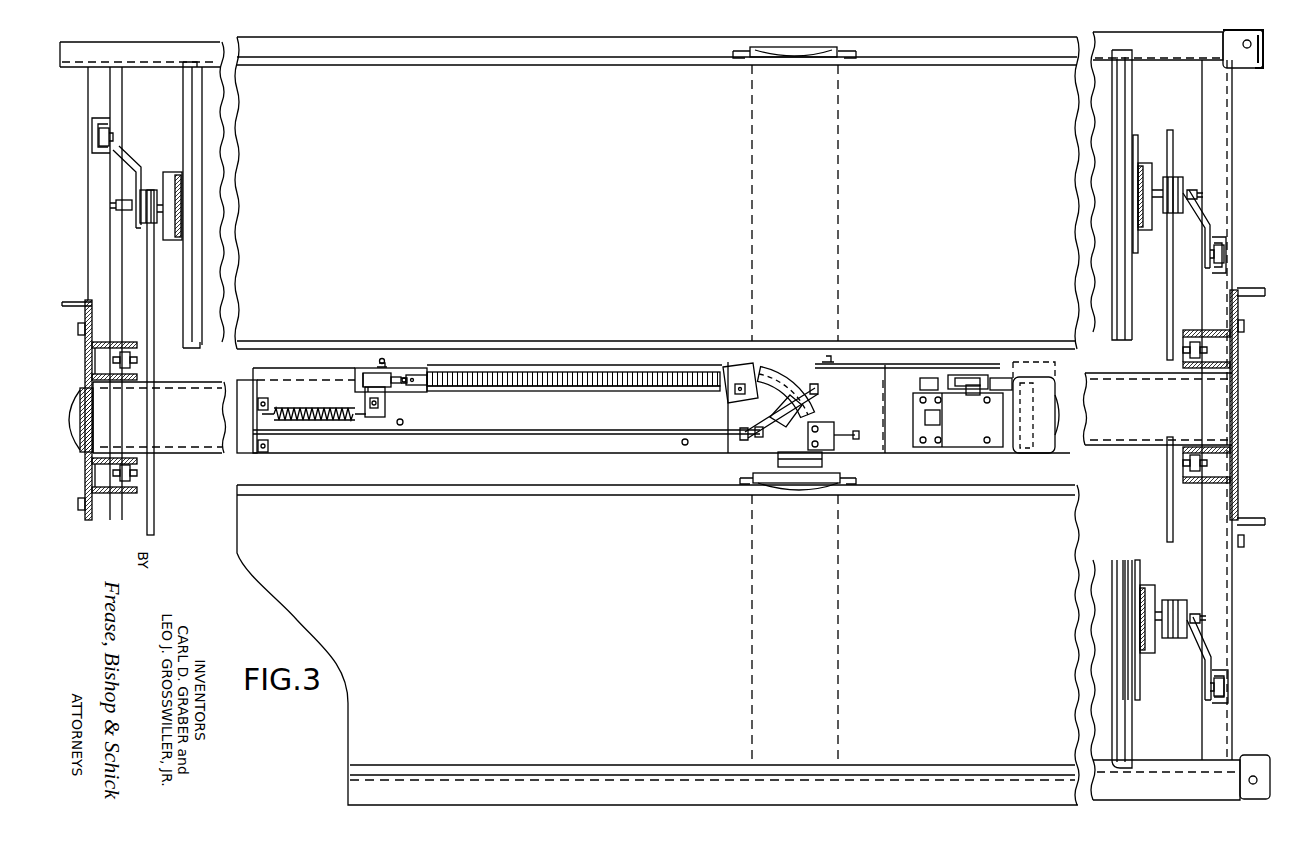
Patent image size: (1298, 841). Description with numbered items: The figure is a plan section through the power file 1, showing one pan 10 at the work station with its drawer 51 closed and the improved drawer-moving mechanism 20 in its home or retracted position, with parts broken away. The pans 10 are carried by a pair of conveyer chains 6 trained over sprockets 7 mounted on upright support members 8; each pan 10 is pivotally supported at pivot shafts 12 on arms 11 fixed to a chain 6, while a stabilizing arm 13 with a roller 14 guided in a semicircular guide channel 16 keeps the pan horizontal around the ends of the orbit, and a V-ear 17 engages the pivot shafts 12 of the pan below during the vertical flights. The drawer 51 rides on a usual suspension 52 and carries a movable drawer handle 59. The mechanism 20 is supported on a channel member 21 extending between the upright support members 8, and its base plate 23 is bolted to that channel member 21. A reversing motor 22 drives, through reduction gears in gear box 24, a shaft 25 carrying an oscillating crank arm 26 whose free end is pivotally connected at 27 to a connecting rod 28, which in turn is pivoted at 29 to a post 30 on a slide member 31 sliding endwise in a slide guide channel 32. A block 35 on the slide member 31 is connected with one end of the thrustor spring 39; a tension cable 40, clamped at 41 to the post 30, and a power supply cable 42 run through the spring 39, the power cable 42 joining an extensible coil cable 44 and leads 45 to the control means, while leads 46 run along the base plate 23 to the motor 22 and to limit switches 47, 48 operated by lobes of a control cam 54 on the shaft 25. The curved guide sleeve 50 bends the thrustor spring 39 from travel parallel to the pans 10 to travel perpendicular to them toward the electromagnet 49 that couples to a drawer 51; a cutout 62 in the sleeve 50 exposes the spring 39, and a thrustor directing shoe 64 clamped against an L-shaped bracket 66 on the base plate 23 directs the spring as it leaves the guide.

The power file 1 is at (935, 27).
The conveyer chains 6 is at (150, 356).
The sprockets 7 is at (365, 470).
The upright support members 8 is at (72, 300).
The pans 10 is at (228, 355).
The arms 11 is at (152, 513).
The pivot shafts 12 is at (160, 185).
The stabilizing arm 13 is at (125, 165).
The roller 14 is at (100, 142).
The semicircular guide channel 16 is at (100, 222).
The V-ear 17 is at (170, 228).
The drawer-moving mechanism 20 is at (735, 350).
The channel member 21 is at (154, 439).
The reversing motor 22 is at (1065, 440).
The base plate 23 is at (635, 440).
The gear box 24 is at (955, 440).
The shaft 25 is at (973, 396).
The oscillating crank arm 26 is at (905, 366).
The pivotal connection 27 is at (828, 355).
The connecting rod 28 is at (578, 363).
The pivotal connection 29 is at (383, 358).
The post 30 is at (372, 374).
The slide member 31 is at (357, 378).
The slide guide channel 32 is at (500, 392).
The block 35 is at (418, 378).
The thrustor spring 39 is at (625, 372).
The tension cable 40 is at (408, 376).
The clamp 41 is at (396, 373).
The power supply cable 42 is at (405, 395).
The extensible coil cable 44 is at (330, 410).
The leads 45 is at (247, 420).
The leads 46 is at (585, 430).
The limit switch 47 is at (926, 378).
The limit switch 48 is at (1000, 376).
The electromagnet 49 is at (805, 462).
The curved guide sleeve 50 is at (780, 380).
The drawer 51 is at (915, 768).
The suspension 52 is at (1125, 700).
The control cam 54 is at (970, 376).
The drawer handle 59 is at (773, 490).
The cutout 62 is at (770, 445).
The thrustor directing shoe 64 is at (822, 436).
The L-shaped bracket 66 is at (842, 432).